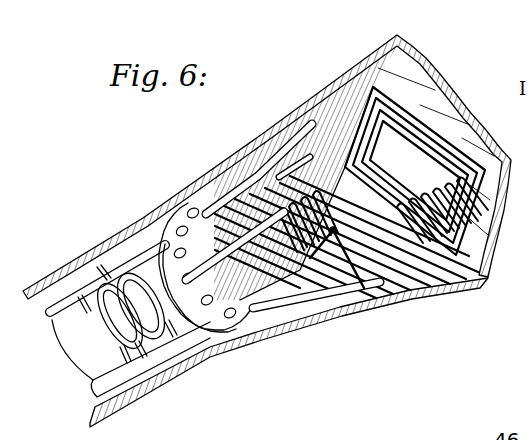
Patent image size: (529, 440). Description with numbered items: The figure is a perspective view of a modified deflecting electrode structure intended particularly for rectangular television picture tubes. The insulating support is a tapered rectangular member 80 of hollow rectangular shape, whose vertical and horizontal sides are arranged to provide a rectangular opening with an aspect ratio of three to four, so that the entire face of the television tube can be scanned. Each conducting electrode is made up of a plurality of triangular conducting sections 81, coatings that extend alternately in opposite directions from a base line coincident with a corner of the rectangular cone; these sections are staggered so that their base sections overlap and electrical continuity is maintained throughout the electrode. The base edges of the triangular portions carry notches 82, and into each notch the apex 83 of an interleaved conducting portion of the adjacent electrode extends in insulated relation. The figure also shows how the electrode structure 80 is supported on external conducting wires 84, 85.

The tapered rectangular member 80 is at (420, 112).
The triangular conducting sections 81 is at (352, 108).
The notches 82 is at (348, 178).
The apex of interleaved conducting portions 83 is at (340, 175).
The external conducting wire 84 is at (331, 240).
The external conducting wire 85 is at (289, 170).